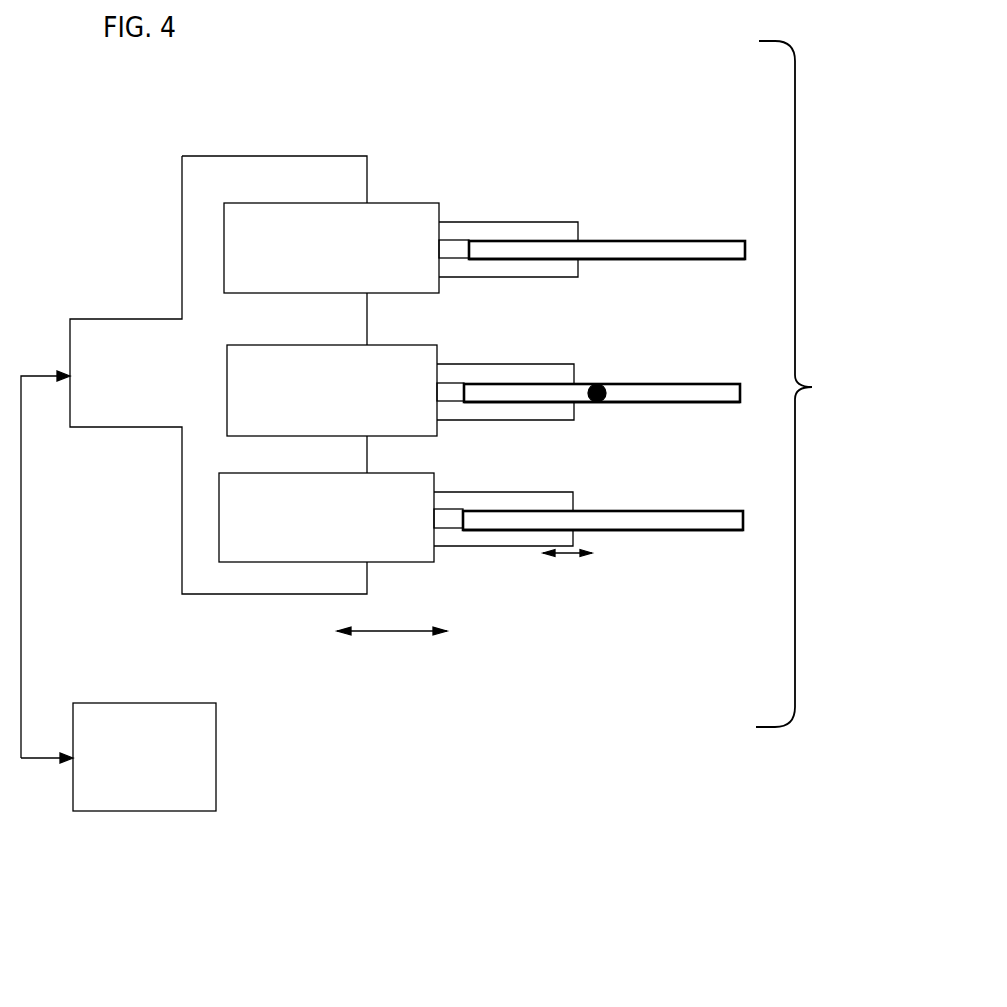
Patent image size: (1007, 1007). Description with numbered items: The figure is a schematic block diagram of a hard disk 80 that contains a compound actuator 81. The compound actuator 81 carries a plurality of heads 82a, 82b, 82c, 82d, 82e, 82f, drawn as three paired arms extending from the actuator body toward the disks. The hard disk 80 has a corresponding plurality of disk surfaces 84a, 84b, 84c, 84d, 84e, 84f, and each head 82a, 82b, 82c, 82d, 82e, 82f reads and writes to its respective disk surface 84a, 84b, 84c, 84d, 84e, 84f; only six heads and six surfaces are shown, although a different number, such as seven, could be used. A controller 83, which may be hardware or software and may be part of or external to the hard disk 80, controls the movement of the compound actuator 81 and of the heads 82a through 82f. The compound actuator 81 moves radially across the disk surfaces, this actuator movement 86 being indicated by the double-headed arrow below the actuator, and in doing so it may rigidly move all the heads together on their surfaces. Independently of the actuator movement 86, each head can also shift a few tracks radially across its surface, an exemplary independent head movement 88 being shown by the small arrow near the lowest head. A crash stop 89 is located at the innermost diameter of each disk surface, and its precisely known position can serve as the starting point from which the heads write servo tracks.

The hard disk 80 is at (795, 300).
The compound actuator 81 is at (182, 172).
The head 82a is at (519, 222).
The head 82b is at (513, 277).
The head 82c is at (527, 364).
The head 82d is at (507, 420).
The head 82e is at (532, 492).
The head 82f is at (500, 546).
The controller 83 is at (151, 702).
The disk surface 84a is at (604, 241).
The disk surface 84b is at (605, 260).
The disk surface 84c is at (637, 384).
The disk surface 84d is at (634, 402).
The disk surface 84e is at (649, 511).
The disk surface 84f is at (636, 530).
The actuator movement 86 is at (400, 631).
The independent head movement 88 is at (566, 553).
The crash stop 89 is at (598, 384).